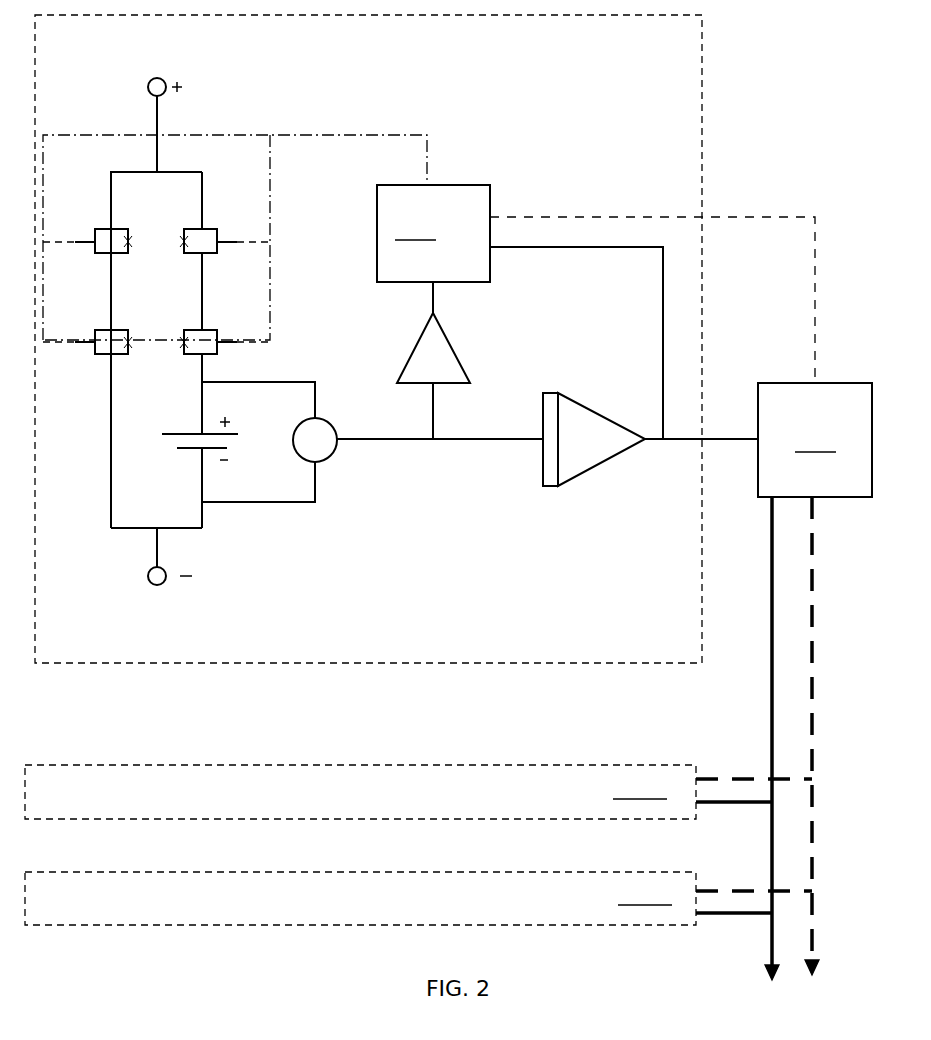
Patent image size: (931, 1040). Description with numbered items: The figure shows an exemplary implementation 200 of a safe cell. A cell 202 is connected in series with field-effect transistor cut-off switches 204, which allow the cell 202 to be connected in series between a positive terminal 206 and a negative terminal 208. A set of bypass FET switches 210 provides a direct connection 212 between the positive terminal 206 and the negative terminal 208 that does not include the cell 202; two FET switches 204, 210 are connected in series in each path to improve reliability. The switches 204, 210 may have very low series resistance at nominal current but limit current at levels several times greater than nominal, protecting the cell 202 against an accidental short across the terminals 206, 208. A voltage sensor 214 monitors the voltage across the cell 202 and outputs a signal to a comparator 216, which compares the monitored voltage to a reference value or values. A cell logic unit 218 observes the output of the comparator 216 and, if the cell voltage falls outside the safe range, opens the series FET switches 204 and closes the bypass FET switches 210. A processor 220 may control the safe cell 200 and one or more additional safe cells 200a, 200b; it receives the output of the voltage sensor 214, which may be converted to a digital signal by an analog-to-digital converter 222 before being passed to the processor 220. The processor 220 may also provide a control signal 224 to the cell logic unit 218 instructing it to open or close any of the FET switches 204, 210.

The safe cell implementation 200 is at (686, 652).
The additional safe cell 200a is at (418, 792).
The additional safe cell 200b is at (418, 898).
The cell 202 is at (202, 450).
The FET cut-off switches 204 is at (244, 291).
The positive terminal 206 is at (150, 78).
The negative terminal 208 is at (150, 587).
The bypass FET switches 210 is at (100, 291).
The direct connection 212 is at (110, 465).
The voltage sensor 214 is at (335, 446).
The comparator 216 is at (425, 353).
The cell logic unit 218 is at (433, 233).
The processor 220 is at (815, 681).
The analog-to-digital converter 222 is at (575, 457).
The control signal 224 is at (625, 227).